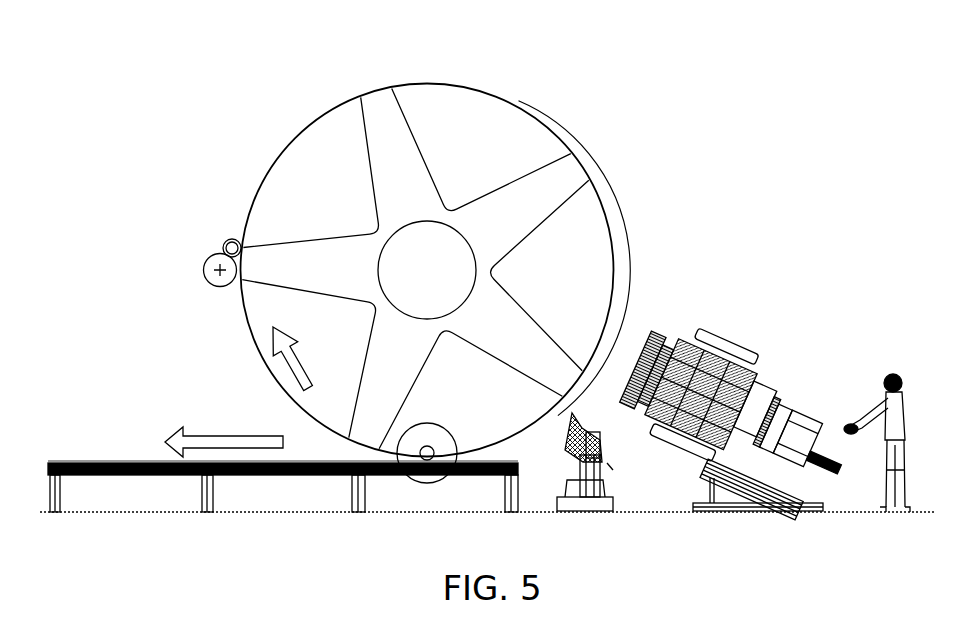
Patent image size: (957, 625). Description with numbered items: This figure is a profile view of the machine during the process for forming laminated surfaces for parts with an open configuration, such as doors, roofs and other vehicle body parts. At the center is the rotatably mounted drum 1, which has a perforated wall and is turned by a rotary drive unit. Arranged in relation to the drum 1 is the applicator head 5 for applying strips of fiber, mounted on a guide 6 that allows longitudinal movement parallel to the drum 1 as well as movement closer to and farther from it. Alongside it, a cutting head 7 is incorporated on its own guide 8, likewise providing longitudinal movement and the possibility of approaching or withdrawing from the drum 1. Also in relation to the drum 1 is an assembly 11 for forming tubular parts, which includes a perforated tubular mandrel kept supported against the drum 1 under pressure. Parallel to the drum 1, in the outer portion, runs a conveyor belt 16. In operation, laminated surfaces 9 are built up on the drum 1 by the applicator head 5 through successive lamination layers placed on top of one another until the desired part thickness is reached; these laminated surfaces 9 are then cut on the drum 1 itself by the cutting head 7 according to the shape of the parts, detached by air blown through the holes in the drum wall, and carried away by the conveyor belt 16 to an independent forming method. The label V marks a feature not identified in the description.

The drum 1 is at (487, 72).
The applicator head 5 is at (771, 361).
The guide 6 is at (743, 493).
The cutting head 7 is at (607, 463).
The guide 8 is at (578, 500).
The laminated surfaces 9 is at (611, 315).
The assembly for forming tubular parts 11 is at (218, 241).
The conveyor belt 16 is at (91, 462).
The drive roller V is at (440, 455).